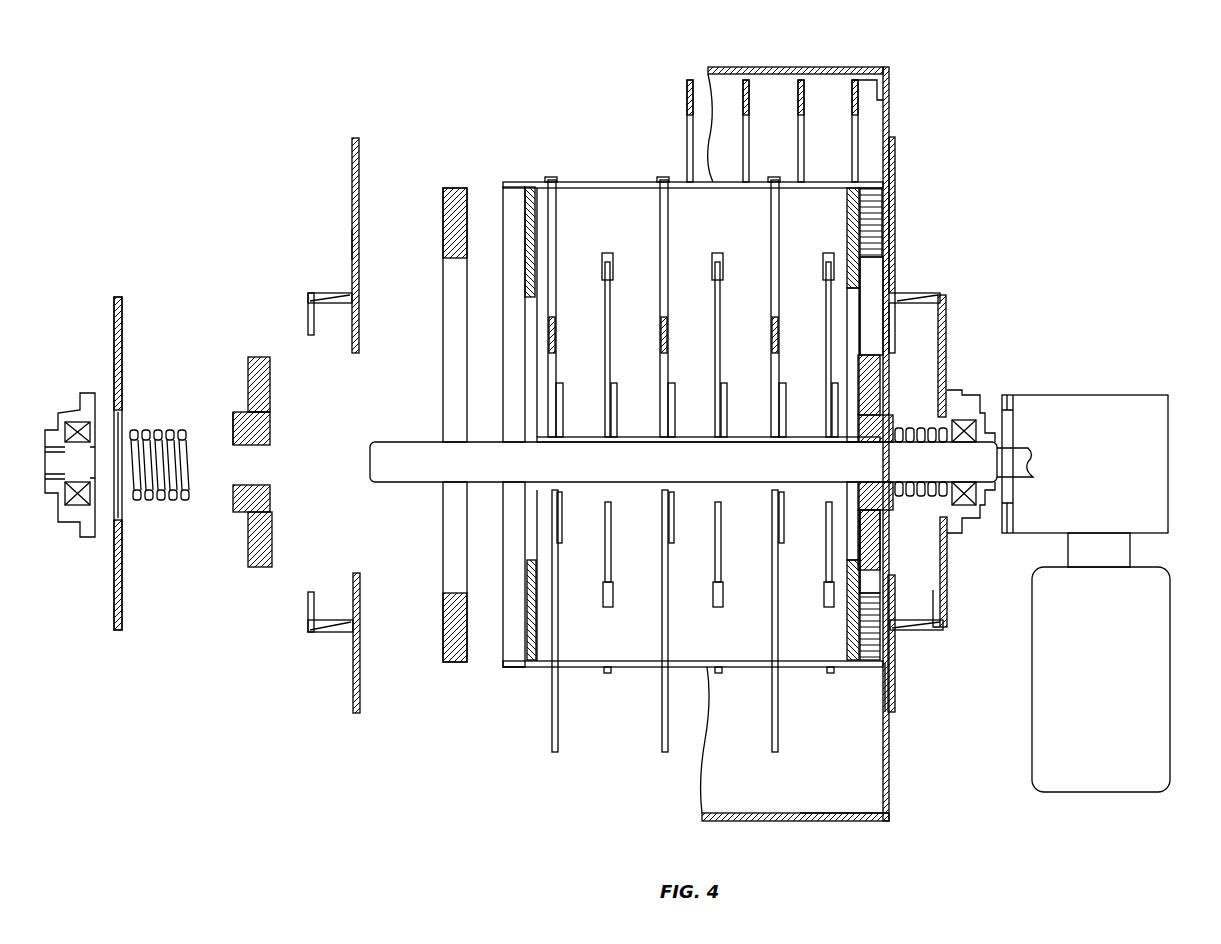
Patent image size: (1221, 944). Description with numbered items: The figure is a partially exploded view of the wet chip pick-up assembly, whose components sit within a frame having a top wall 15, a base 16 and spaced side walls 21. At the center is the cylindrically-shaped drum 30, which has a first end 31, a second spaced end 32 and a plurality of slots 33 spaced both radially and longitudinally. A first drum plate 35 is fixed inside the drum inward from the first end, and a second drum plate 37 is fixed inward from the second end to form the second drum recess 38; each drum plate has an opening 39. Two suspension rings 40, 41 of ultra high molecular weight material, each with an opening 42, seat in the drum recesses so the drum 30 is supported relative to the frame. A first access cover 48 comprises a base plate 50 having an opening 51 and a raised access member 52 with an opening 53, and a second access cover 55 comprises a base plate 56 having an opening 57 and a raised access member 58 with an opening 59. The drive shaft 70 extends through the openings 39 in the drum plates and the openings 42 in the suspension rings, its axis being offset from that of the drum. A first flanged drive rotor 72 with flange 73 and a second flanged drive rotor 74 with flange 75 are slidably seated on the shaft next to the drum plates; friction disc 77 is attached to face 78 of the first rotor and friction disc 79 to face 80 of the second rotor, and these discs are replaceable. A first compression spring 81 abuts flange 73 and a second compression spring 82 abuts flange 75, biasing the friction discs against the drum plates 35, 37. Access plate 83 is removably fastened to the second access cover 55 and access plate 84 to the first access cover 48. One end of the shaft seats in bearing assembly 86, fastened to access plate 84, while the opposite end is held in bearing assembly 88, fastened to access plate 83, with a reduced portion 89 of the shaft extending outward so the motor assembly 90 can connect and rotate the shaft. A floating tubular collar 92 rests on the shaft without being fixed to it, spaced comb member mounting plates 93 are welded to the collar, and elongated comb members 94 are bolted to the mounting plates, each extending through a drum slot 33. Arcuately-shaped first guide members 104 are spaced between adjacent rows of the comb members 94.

The top wall 15 is at (860, 67).
The base 16 is at (830, 818).
The side walls 21 is at (890, 770).
The drum 30 is at (598, 185).
The first end 31 is at (896, 175).
The second end 32 is at (505, 187).
The slots 33 is at (660, 178).
The first drum plate 35 is at (870, 265).
The second drum plate 37 is at (526, 266).
The second drum recess 38 is at (512, 638).
The opening 39 is at (850, 270).
The suspension ring 40 is at (884, 215).
The suspension ring 41 is at (444, 236).
The opening 42 is at (880, 285).
The first access cover 48 is at (352, 195).
The base plate 50 is at (352, 243).
The opening 51 is at (357, 575).
The raised access member 52 is at (308, 322).
The opening 53 is at (312, 592).
The second access cover 55 is at (915, 297).
The base plate 56 is at (896, 682).
The opening 57 is at (895, 358).
The raised access member 58 is at (920, 630).
The opening 59 is at (946, 340).
The drive shaft 70 is at (681, 473).
The first flanged drive rotor 72 is at (905, 430).
The flange 73 is at (897, 500).
The second flanged drive rotor 74 is at (240, 418).
The flange 75 is at (240, 513).
The friction disc 77 is at (866, 415).
The face 78 is at (866, 375).
The friction disc 79 is at (265, 375).
The face 80 is at (258, 357).
The first compression spring 81 is at (948, 400).
The second compression spring 82 is at (150, 430).
The access plate 83 is at (948, 590).
The access plate 84 is at (113, 608).
The bearing assembly 86 is at (70, 393).
The bearing assembly 88 is at (955, 405).
The reduced portion 89 is at (1033, 459).
The motor assembly 90 is at (1168, 592).
The floating tubular collar 92 is at (582, 437).
The comb member mounting plates 93 is at (560, 518).
The comb members 94 is at (552, 240).
The first guide members 104 is at (687, 160).